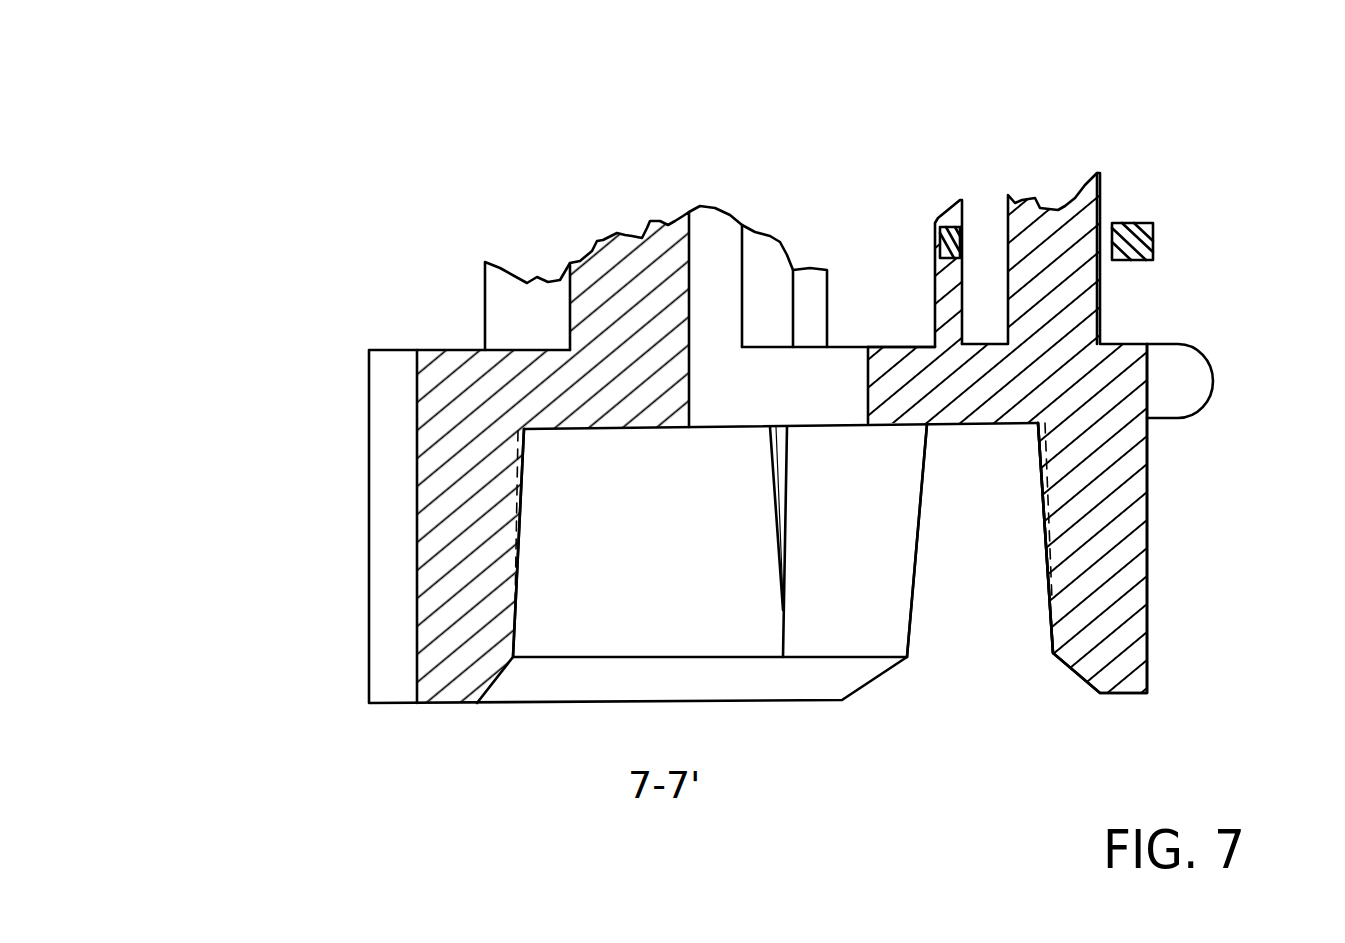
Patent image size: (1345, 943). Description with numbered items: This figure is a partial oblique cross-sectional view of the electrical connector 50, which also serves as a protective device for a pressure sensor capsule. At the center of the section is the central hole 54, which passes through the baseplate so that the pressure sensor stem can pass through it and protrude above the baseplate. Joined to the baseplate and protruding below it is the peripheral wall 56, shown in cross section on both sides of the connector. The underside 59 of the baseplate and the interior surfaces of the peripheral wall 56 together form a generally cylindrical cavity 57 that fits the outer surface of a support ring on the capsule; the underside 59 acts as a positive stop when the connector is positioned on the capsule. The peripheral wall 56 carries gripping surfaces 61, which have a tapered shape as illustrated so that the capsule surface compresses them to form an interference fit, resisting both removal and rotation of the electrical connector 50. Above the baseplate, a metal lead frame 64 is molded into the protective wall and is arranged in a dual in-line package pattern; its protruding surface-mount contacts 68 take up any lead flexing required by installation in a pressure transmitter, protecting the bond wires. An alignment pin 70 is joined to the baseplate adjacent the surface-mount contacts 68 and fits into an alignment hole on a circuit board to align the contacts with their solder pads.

The electrical connector 50 is at (366, 175).
The central hole 54 is at (796, 405).
The peripheral wall 56 is at (437, 557).
The generally cylindrical cavity 57 is at (994, 512).
The underside 59 is at (580, 431).
The gripping surfaces 61 is at (524, 516).
The metal lead frame 64 is at (951, 240).
The surface-mount contact 68 is at (1157, 224).
The alignment pin 70 is at (1177, 372).